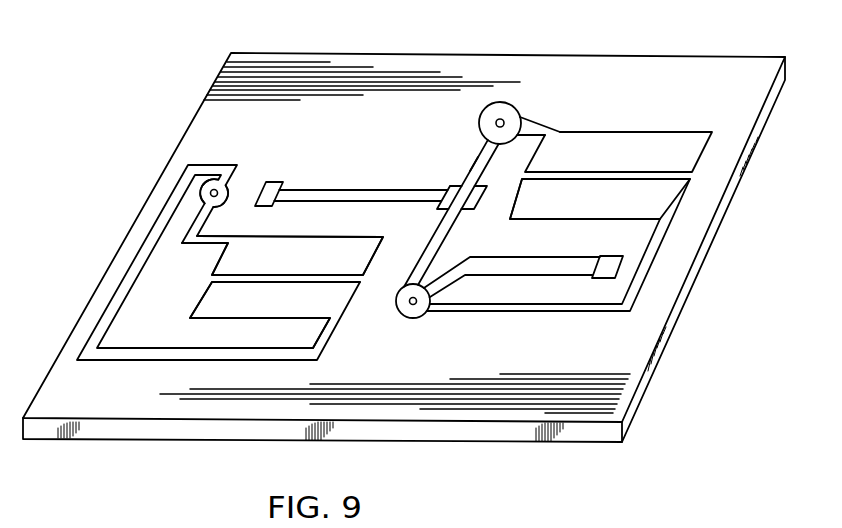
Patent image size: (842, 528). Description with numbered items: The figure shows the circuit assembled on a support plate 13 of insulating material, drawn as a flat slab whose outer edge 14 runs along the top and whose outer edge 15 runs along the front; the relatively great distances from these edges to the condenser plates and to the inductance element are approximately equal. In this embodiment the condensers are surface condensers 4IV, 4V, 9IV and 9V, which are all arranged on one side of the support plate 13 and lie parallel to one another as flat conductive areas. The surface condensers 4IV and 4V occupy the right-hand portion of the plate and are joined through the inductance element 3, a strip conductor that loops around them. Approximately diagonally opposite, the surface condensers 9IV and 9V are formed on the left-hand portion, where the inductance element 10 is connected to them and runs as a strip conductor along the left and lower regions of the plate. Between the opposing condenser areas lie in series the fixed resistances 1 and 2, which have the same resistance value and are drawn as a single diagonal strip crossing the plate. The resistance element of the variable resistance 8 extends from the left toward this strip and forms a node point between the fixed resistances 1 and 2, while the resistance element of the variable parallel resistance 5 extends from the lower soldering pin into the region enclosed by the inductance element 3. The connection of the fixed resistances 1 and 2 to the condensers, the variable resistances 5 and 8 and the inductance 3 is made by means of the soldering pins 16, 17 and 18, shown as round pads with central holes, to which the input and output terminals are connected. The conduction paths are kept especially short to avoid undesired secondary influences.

The fixed resistance 1 is at (438, 250).
The fixed resistance 2 is at (478, 166).
The inductance element 3 is at (580, 309).
The surface condenser 4IV is at (590, 145).
The surface condenser 4V is at (548, 212).
The variable resistance 5 is at (519, 266).
The variable resistance 8 is at (336, 190).
The surface condenser 9IV is at (267, 246).
The surface condenser 9V is at (200, 309).
The inductance element 10 is at (116, 292).
The support plate 13 is at (675, 335).
The outer edge 14 is at (440, 56).
The outer edge 15 is at (417, 430).
The soldering pin 16 is at (513, 108).
The soldering pin 17 is at (404, 316).
The soldering pin 18 is at (229, 190).